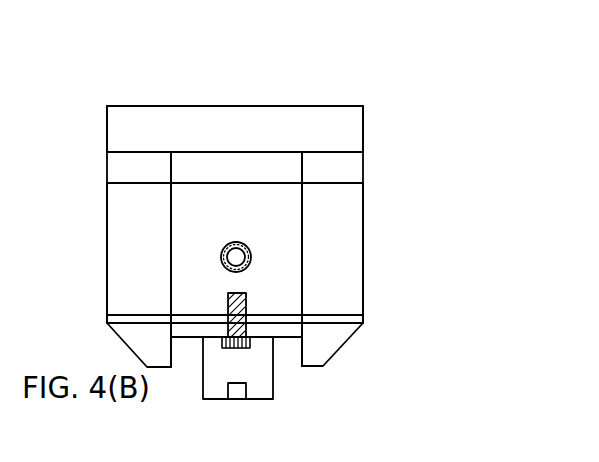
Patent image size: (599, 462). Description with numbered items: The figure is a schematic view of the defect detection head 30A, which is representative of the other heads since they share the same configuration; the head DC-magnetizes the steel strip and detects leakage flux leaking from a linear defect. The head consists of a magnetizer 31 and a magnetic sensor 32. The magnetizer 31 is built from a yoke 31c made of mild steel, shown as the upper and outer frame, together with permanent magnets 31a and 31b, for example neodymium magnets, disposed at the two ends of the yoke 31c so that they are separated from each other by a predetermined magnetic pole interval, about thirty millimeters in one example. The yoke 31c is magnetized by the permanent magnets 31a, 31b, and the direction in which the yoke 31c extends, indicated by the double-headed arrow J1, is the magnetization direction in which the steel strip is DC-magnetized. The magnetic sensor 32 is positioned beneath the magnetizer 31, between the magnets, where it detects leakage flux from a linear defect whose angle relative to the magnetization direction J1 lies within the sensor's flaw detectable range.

The defect detection head 30A is at (400, 34).
The magnetizer 31 is at (234, 104).
The permanent magnet 31a is at (130, 262).
The permanent magnet 31b is at (355, 258).
The yoke 31c is at (352, 128).
The magnetic sensor 32 is at (260, 379).
The magnetization direction J1 is at (188, 64).